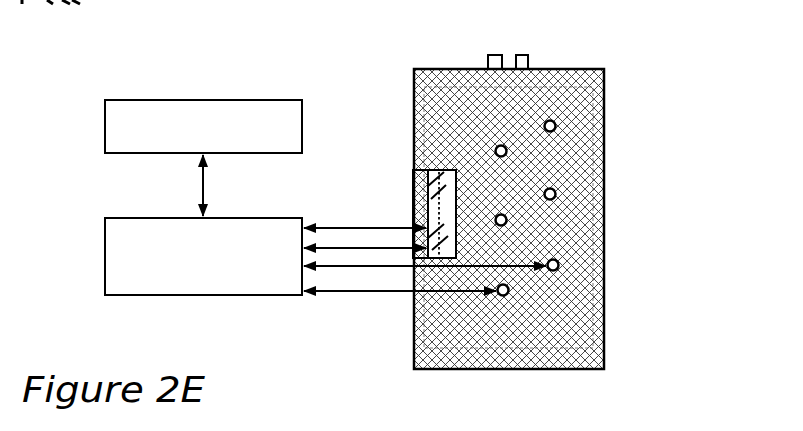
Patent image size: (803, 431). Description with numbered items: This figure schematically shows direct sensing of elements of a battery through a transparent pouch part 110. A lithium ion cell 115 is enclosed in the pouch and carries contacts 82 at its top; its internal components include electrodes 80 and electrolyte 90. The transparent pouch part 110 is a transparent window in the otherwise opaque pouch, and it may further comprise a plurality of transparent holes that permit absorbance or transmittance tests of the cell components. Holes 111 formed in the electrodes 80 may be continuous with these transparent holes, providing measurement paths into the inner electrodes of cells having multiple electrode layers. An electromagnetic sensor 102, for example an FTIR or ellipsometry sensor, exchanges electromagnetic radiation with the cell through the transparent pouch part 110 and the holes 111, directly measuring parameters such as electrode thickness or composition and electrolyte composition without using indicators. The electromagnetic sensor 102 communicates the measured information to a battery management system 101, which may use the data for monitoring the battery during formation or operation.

The battery management system 101 is at (105, 120).
The electromagnetic sensor 102 is at (105, 234).
The lithium ion cell 115 is at (556, 34).
The contacts 82 is at (520, 55).
The transparent pouch part 110 is at (421, 200).
The electrolyte 90 is at (434, 180).
The electrodes 80 is at (431, 176).
The holes 111 is at (558, 195).